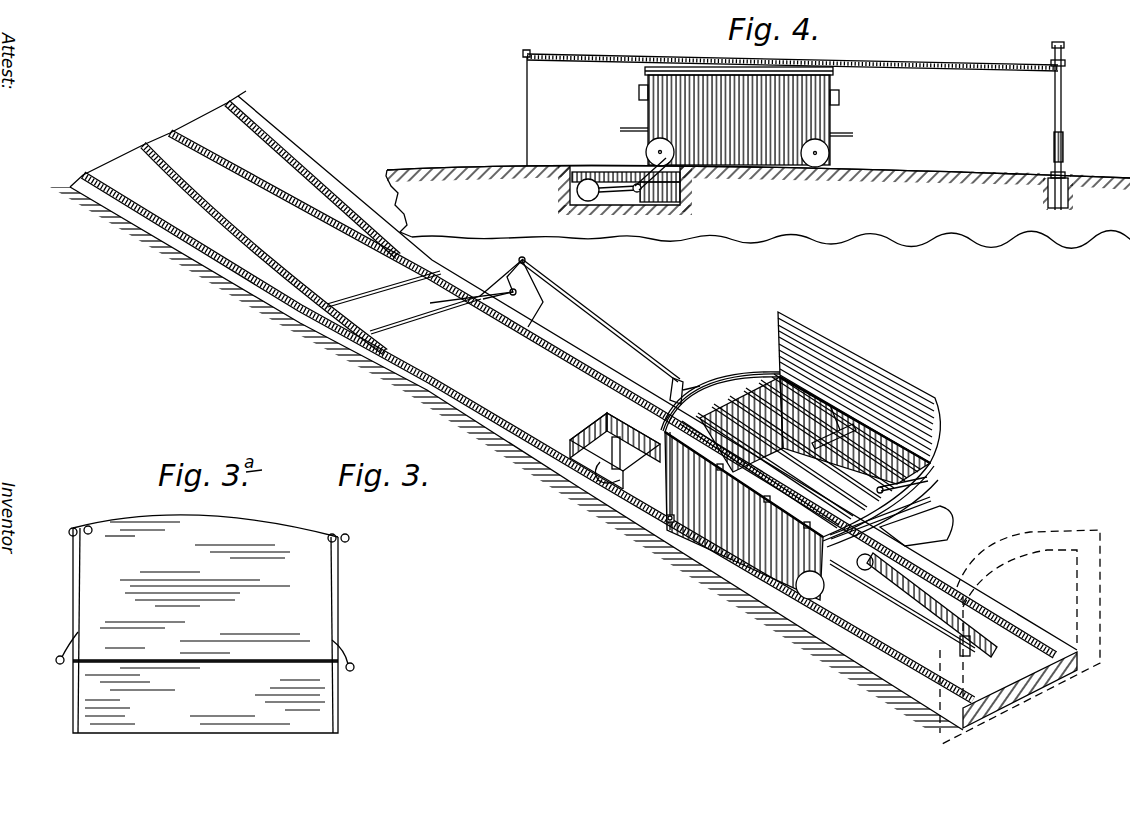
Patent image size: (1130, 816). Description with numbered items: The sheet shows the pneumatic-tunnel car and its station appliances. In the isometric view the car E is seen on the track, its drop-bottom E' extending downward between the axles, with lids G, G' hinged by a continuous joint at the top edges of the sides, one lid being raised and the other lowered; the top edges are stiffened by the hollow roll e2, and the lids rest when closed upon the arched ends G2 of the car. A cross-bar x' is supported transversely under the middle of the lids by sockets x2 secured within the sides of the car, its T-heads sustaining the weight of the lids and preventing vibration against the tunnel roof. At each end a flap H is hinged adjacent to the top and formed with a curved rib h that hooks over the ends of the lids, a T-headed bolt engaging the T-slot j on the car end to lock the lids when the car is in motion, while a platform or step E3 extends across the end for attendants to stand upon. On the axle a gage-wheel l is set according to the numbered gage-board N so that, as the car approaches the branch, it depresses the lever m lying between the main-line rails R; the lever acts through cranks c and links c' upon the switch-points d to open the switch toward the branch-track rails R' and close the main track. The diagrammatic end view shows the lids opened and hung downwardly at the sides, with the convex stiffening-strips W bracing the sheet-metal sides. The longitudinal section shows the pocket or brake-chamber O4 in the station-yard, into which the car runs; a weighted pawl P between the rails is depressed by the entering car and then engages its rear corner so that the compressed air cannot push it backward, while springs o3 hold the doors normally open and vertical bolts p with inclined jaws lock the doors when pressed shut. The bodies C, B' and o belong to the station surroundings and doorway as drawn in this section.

In FIG. 3, the main-line rails R is at (569, 412).
In FIG. 4, the branch-track rails R' is at (758, 162).
In FIG. 3, the branch-track rails R' is at (271, 227).
In FIG. 3, the switch-points d is at (420, 369).
In FIG. 3, the cranks c is at (590, 330).
In FIG. 3, the links c' is at (565, 320).
In FIG. 3, the post in pit C is at (609, 462).
In FIG. 3, the flap H is at (612, 415).
In FIG. 3, the car E is at (797, 488).
In FIG. 4, the drop-bottom E' is at (736, 117).
In FIG. 3A, the drop-bottom E' is at (205, 627).
In FIG. 3, the platform or step E3 is at (934, 526).
In FIG. 3, the lid G is at (797, 455).
In FIG. 3A, the lid G is at (357, 635).
In FIG. 3, the lid G' is at (877, 387).
In FIG. 3A, the lid G' is at (66, 629).
In FIG. 3A, the ends of the car G2 is at (262, 515).
In FIG. 3, the roll e2 is at (915, 450).
In FIG. 3A, the roll e2 is at (328, 541).
In FIG. 3, the curved rib h is at (740, 380).
In FIG. 3, the T-slot j is at (930, 479).
In FIG. 3, the cross-bar x' is at (848, 374).
In FIG. 3, the sockets x2 is at (860, 425).
In FIG. 3, the gage-wheel l is at (902, 606).
In FIG. 3, the lever m is at (925, 612).
In FIG. 3, the gage-board N is at (937, 615).
In FIG. 3A, the convex stiffening-strips W is at (340, 682).
In FIG. 4, the ground / bank B' is at (758, 208).
In FIG. 4, the weighted pawl P is at (690, 190).
In FIG. 4, the pocket or brake-chamber O4 is at (934, 62).
In FIG. 4, the post o is at (1053, 118).
In FIG. 4, the springs o3 is at (1065, 148).
In FIG. 4, the vertical bolts p is at (1066, 64).